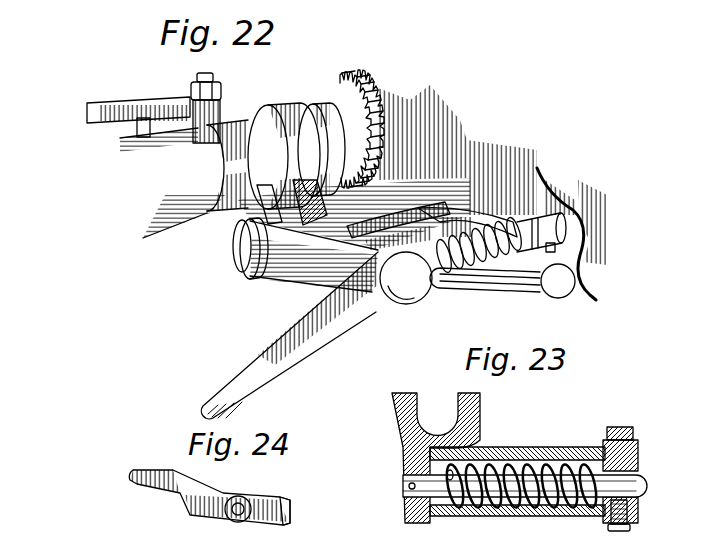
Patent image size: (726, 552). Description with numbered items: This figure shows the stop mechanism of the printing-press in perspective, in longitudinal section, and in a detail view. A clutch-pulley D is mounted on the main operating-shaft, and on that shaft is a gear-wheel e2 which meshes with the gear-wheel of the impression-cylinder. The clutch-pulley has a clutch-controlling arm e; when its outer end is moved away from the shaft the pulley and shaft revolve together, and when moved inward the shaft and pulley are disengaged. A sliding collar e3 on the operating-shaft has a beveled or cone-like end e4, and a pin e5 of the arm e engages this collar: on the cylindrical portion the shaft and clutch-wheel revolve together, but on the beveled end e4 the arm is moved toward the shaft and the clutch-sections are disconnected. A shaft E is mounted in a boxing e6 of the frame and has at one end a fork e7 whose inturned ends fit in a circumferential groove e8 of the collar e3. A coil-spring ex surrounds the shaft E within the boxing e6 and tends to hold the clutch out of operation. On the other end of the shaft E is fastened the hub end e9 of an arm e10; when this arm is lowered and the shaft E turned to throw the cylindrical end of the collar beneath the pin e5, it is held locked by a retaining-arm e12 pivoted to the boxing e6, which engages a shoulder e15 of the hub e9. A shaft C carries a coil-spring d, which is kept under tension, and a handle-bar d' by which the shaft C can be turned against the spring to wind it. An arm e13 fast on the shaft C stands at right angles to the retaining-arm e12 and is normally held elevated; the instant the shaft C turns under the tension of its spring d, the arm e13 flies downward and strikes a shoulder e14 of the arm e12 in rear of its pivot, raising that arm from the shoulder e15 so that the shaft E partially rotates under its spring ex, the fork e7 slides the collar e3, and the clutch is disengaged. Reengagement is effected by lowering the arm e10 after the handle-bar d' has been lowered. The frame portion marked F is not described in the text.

In FIG. 22, the clutch-controlling arm e is at (154, 108).
In FIG. 22, the gear-wheel e2 is at (330, 95).
In FIG. 22, the sliding collar e3 is at (298, 104).
In FIG. 22, the beveled or cone-like end e4 is at (258, 110).
In FIG. 22, the pin e5 is at (200, 128).
In FIG. 22, the boxing e6 is at (305, 264).
In FIG. 23, the boxing e6 is at (582, 453).
In FIG. 22, the fork e7 is at (238, 225).
In FIG. 23, the fork e7 is at (436, 458).
In FIG. 22, the circumferential groove e8 is at (296, 84).
In FIG. 22, the hub end e9 is at (404, 305).
In FIG. 23, the hub end e9 is at (640, 462).
In FIG. 22, the arm e10 is at (289, 335).
In FIG. 22, the retaining-arm e12 is at (458, 200).
In FIG. 23, the retaining-arm e12 is at (623, 423).
In FIG. 24, the retaining-arm e12 is at (209, 497).
In FIG. 22, the arm e13 is at (497, 235).
In FIG. 22, the shoulder e14 is at (486, 210).
In FIG. 24, the shoulder e14 is at (281, 497).
In FIG. 22, the shoulder e15 is at (463, 272).
In FIG. 23, the shoulder e15 is at (641, 448).
In FIG. 23, the coil-spring ex is at (528, 508).
In FIG. 22, the coil-spring d is at (485, 304).
In FIG. 22, the handle-bar d' is at (534, 302).
In FIG. 22, the clutch-pulley D is at (145, 213).
In FIG. 22, the shaft C is at (566, 222).
In FIG. 23, the shaft E is at (403, 488).
In FIG. 22, the frame plate F is at (553, 198).